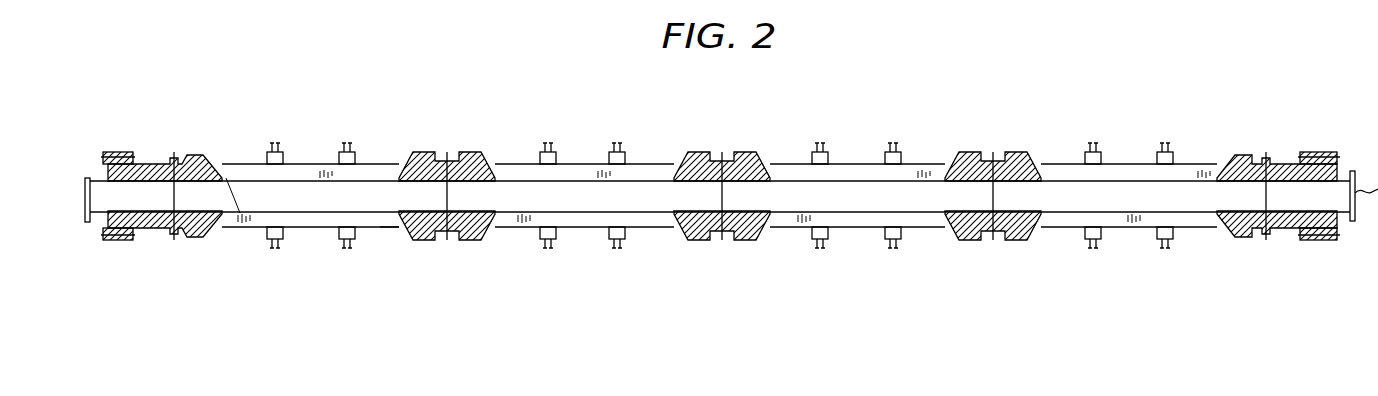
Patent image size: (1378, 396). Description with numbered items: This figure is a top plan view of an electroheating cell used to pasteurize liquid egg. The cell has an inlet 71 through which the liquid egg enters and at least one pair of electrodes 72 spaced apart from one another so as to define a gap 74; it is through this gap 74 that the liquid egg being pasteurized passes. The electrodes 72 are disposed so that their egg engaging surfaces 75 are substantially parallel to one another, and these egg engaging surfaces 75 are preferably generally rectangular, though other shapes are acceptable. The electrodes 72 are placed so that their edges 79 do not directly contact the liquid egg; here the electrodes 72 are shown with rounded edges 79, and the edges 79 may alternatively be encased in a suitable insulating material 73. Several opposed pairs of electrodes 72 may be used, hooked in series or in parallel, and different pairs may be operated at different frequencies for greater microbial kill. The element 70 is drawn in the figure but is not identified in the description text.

The connector 70 is at (273, 153).
The connector 71 is at (82, 199).
The outer tube upper wall 72 is at (305, 165).
The coupling 73 is at (400, 180).
The outer tube lower wall 74 is at (310, 210).
The inner tube 75 is at (270, 182).
The lead line 79 is at (400, 180).